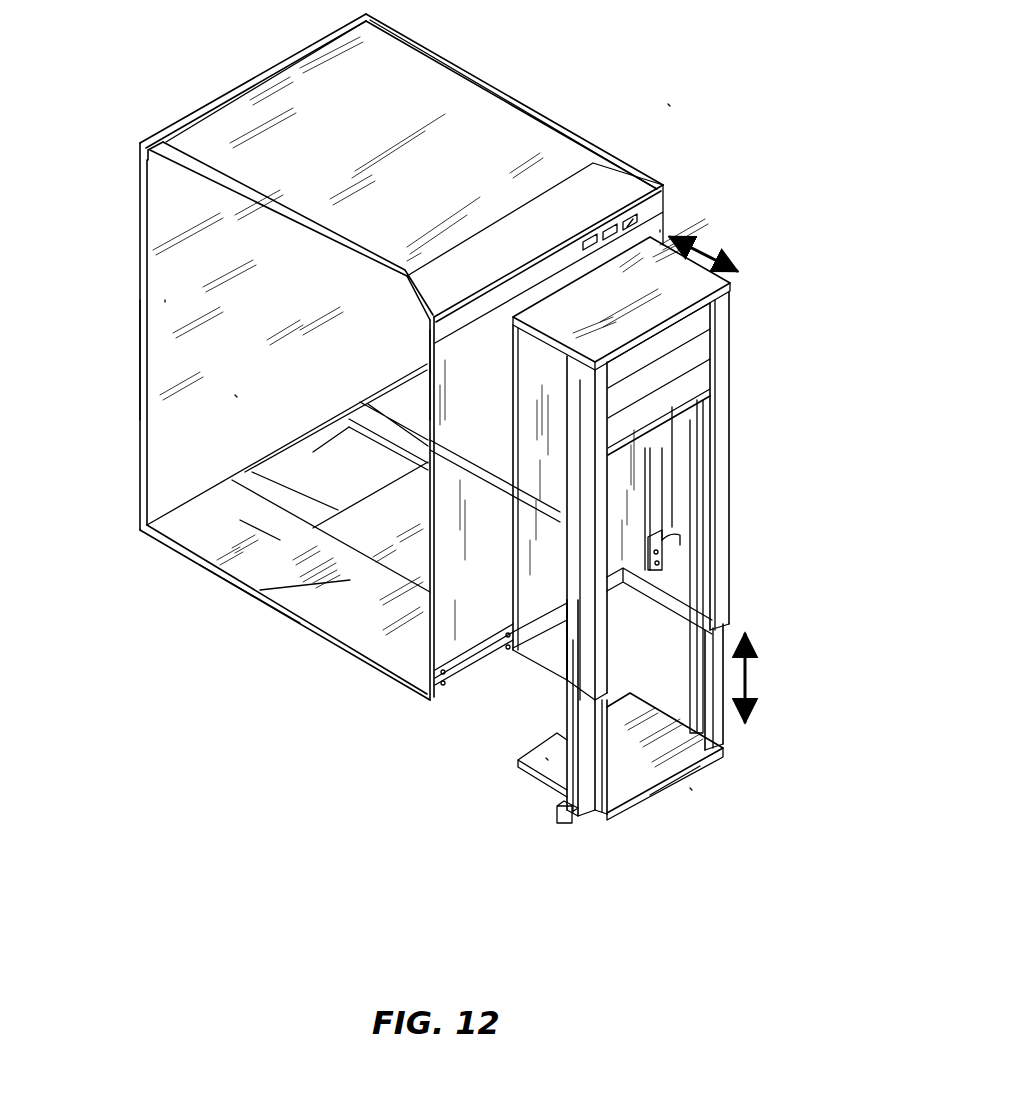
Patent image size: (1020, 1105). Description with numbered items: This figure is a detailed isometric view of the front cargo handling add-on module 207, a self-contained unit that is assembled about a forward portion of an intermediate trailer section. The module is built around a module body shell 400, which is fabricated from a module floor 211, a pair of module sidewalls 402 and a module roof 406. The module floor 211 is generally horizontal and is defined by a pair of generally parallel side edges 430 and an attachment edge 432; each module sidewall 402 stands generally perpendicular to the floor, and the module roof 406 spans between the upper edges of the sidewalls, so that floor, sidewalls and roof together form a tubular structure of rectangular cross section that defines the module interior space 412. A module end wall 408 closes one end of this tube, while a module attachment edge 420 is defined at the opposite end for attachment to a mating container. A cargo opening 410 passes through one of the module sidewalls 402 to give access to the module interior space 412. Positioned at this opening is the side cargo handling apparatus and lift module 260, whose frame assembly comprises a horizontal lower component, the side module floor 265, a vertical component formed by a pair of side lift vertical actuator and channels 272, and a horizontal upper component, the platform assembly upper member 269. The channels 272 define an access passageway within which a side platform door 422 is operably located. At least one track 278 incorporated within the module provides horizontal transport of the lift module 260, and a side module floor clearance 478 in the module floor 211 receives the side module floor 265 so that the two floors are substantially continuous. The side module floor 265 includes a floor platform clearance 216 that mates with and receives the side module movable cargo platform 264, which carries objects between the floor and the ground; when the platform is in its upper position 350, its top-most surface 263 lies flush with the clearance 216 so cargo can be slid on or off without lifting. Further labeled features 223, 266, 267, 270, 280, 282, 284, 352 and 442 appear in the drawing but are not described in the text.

The front cargo handling add-on module 207 is at (668, 110).
The module floor 211 is at (290, 588).
The floor platform clearance 216 is at (660, 596).
The chamber 223 is at (259, 538).
The side cargo handling apparatus and lift module 260 is at (690, 788).
The top-most surface 263 is at (548, 762).
The side module movable cargo platform 264 is at (688, 769).
The side module floor 265 is at (527, 570).
The platform edge 266 is at (680, 788).
The shelf 267 is at (371, 528).
The platform assembly upper member 269 is at (668, 298).
The post 270 is at (601, 773).
The side lift vertical actuator and channels 272 is at (725, 513).
The track 278 is at (348, 430).
The stop block 280 is at (566, 811).
The support plate 282 is at (569, 752).
The drive belt 284 is at (690, 596).
The upper position 350 is at (752, 636).
The downward direction 352 is at (752, 720).
The module body shell 400 is at (146, 126).
The module sidewalls 402 is at (160, 322).
The module roof 406 is at (296, 100).
The module end wall 408 is at (522, 100).
The cargo opening 410 is at (520, 398).
The module interior space 412 is at (232, 397).
The module attachment edge 420 is at (143, 290).
The side platform door 422 is at (677, 375).
The side edges 430 is at (394, 384).
The attachment edge 432 is at (303, 624).
The connectors 442 is at (640, 222).
The side module floor clearance 478 is at (313, 452).